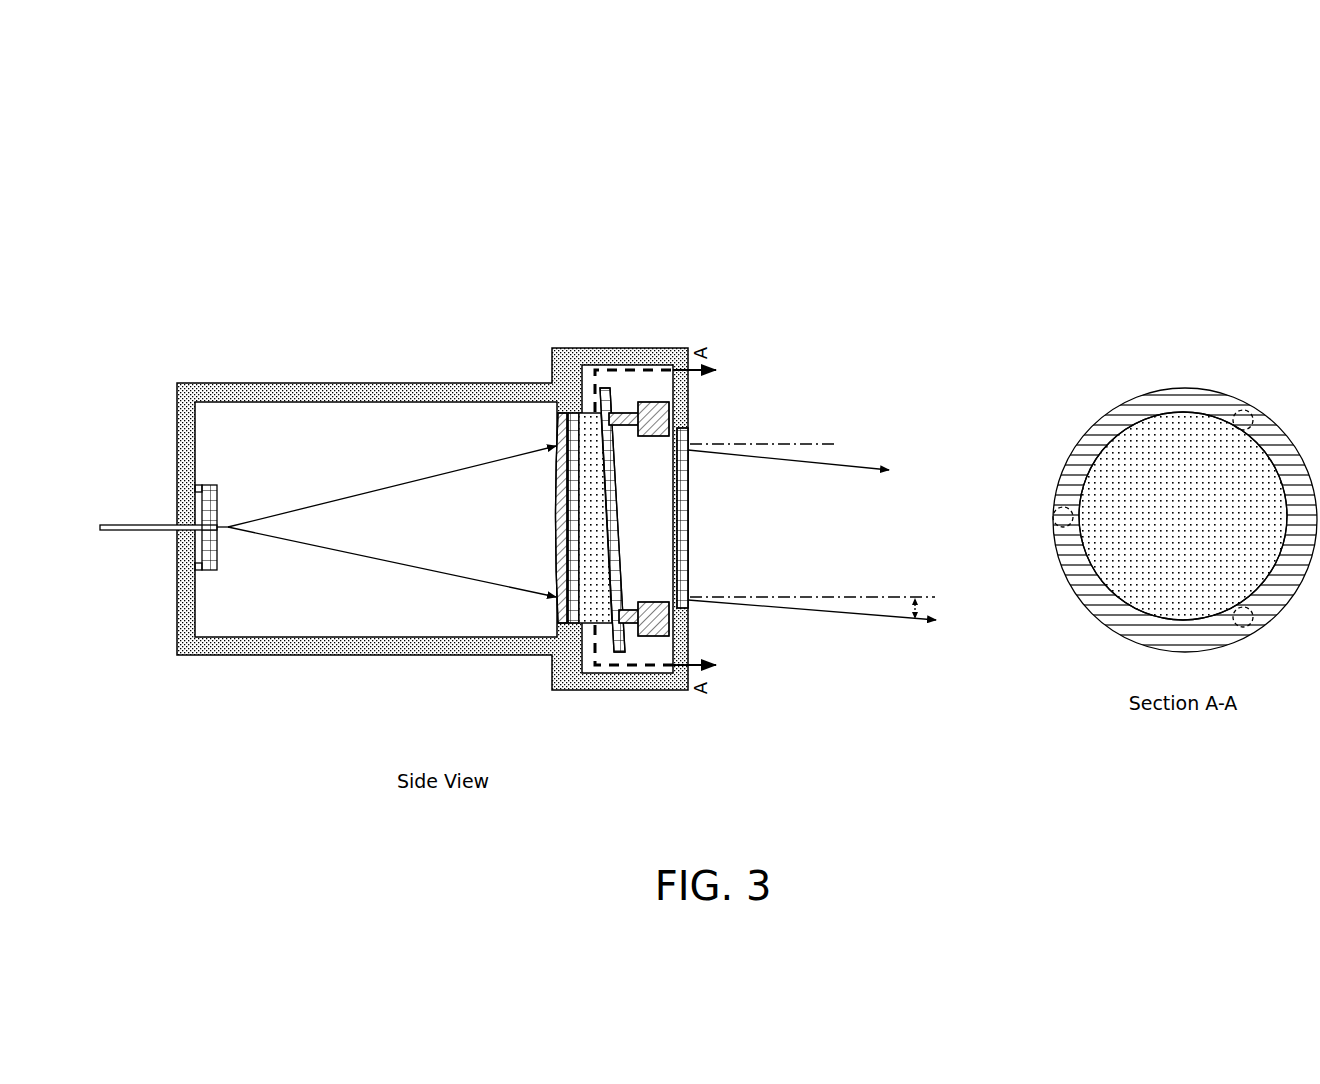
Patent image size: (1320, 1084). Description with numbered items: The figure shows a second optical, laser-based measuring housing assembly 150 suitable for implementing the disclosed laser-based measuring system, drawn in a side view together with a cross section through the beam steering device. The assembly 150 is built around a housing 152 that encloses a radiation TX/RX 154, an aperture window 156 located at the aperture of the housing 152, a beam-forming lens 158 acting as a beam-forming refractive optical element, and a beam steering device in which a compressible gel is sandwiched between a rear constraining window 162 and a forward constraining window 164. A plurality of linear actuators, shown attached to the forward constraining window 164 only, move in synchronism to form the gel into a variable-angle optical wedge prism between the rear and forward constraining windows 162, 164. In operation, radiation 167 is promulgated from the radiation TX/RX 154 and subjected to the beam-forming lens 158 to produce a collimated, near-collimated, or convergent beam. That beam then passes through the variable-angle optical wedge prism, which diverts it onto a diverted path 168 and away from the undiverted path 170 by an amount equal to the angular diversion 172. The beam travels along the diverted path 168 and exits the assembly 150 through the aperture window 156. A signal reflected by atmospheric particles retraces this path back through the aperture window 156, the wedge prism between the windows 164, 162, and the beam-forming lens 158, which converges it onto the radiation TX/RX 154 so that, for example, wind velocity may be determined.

The optical, laser-based measuring housing assembly 150 is at (252, 196).
The housing 152 is at (258, 382).
The radiation TX/RX 154 is at (232, 500).
The aperture window 156 is at (690, 481).
The beam-forming lens 158 is at (554, 540).
The rear constraining window 162 is at (571, 408).
The forward constraining window 164 is at (604, 386).
The radiation 167 is at (461, 468).
The diverted path 168 is at (866, 462).
The undiverted path 170 is at (770, 442).
The angular diversion 172 is at (812, 638).